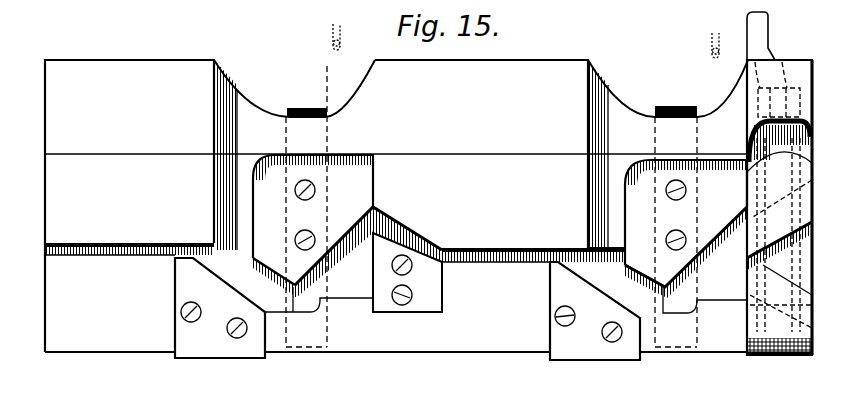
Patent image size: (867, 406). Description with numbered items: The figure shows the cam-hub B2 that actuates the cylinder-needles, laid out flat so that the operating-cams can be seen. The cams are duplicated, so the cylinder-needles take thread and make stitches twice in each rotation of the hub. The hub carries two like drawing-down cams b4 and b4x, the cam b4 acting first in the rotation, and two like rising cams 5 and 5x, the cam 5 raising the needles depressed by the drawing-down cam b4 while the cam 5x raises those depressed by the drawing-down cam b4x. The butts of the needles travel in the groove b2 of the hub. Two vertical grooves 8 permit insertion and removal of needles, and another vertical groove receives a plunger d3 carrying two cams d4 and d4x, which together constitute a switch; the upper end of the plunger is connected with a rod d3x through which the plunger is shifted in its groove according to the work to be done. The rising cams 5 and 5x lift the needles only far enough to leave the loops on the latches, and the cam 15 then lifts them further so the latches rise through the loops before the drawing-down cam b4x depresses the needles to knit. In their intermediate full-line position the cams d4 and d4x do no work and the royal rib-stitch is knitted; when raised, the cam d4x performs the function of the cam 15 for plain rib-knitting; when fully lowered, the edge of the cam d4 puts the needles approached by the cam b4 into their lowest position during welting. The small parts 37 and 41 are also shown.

The vertical grooves 8 is at (227, 91).
The cam-hub B2 is at (491, 201).
The pin 37 is at (340, 33).
The pin 41 is at (711, 50).
The groove b2 is at (112, 253).
The drawing-down cam b4x is at (351, 182).
The drawing-down cam b4 is at (716, 180).
The cam 15 is at (425, 303).
The rising cam 5x is at (233, 350).
The rising cam 5 is at (588, 355).
The rod d3x is at (777, 36).
The plunger d3 is at (775, 140).
The cam d4 is at (773, 227).
The cam d4x is at (753, 322).